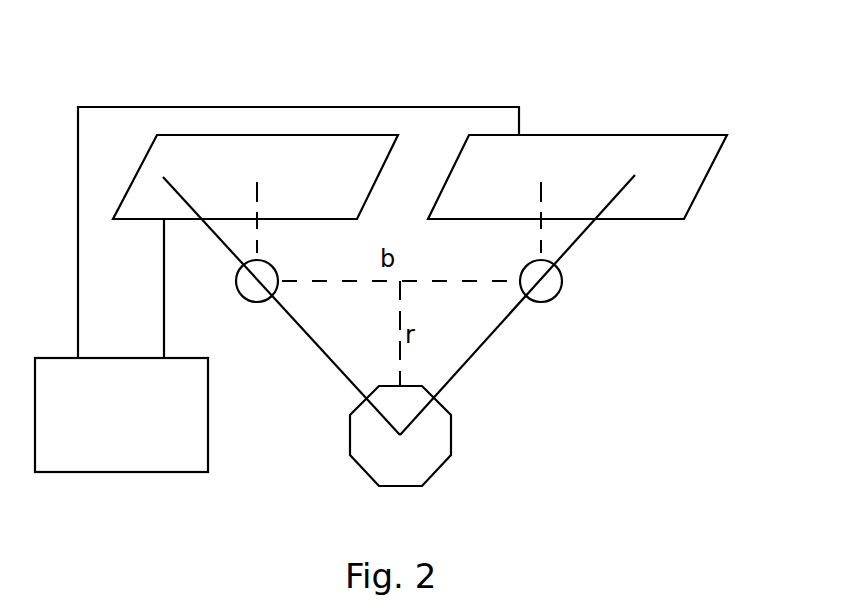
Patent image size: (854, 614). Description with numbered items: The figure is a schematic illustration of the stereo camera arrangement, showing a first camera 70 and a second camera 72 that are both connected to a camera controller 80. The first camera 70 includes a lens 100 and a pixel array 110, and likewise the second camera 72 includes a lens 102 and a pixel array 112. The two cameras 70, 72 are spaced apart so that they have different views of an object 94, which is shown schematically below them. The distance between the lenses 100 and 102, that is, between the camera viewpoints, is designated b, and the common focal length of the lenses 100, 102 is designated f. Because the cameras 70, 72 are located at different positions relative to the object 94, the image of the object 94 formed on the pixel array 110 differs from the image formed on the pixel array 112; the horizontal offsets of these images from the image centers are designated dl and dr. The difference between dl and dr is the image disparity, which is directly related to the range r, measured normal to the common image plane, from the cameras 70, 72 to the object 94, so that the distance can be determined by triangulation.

The first camera 70 is at (183, 71).
The second camera 72 is at (557, 63).
The pixel array 110 is at (135, 175).
The pixel array 112 is at (576, 135).
The lens 100 is at (258, 303).
The lens 102 is at (541, 302).
The object 94 is at (450, 413).
The camera controller 80 is at (208, 412).